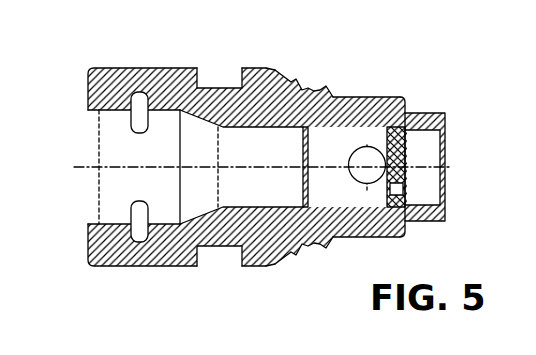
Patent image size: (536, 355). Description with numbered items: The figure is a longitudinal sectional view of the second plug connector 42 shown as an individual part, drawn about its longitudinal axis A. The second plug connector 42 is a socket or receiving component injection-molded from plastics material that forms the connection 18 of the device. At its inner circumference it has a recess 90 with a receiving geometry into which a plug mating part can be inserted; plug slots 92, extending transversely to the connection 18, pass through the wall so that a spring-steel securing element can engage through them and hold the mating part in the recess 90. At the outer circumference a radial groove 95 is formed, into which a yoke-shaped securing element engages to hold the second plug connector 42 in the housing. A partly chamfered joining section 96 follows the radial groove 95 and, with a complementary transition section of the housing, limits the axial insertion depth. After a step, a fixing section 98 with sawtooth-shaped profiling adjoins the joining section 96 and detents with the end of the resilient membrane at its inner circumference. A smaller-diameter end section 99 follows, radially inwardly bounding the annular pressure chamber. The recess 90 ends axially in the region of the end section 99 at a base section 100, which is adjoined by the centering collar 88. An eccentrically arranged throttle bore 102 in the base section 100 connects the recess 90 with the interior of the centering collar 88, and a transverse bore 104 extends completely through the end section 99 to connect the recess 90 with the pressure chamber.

The second plug connector 42 is at (390, 85).
The connection 18 is at (130, 158).
The plug slots 92 is at (146, 208).
The recess 90 is at (212, 158).
The radial groove 95 is at (211, 87).
The joining section 96 is at (272, 68).
The fixing section 98 is at (331, 85).
The end section 99 is at (372, 239).
The transverse bore 104 is at (356, 174).
The base section 100 is at (407, 147).
The throttle bore 102 is at (407, 192).
The centering collar 88 is at (433, 113).
The axis A is at (86, 168).